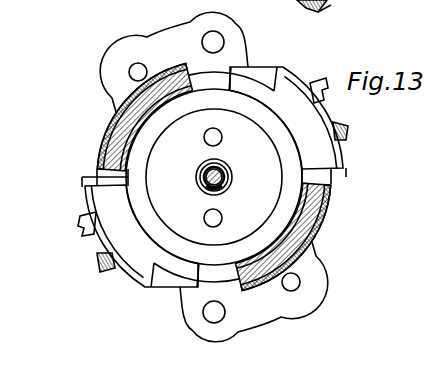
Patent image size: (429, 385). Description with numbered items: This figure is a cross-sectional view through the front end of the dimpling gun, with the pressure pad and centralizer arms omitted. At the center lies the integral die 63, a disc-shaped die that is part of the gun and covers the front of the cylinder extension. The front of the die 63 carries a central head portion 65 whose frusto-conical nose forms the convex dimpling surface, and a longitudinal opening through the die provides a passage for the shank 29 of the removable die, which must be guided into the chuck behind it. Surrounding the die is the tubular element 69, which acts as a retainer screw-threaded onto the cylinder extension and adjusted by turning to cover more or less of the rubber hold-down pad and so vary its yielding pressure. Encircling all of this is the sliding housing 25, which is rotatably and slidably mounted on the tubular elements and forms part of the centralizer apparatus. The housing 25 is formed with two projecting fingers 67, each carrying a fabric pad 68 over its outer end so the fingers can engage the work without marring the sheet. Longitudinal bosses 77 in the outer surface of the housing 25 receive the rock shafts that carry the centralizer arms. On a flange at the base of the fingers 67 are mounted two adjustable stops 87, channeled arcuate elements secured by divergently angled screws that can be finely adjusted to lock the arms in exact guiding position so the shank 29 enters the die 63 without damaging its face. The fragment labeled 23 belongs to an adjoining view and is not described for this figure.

The sliding housing 25 is at (149, 27).
The longitudinal bosses 77 is at (233, 27).
The integral die 63 is at (238, 128).
The head portion 65 is at (229, 168).
The die shank 29 is at (231, 181).
The projecting fingers 67 is at (116, 118).
The fabric pad 68 is at (111, 131).
The tubular element 69 is at (97, 175).
The adjustable stops 87 is at (332, 156).
The adjacent figure element 23 is at (320, 10).